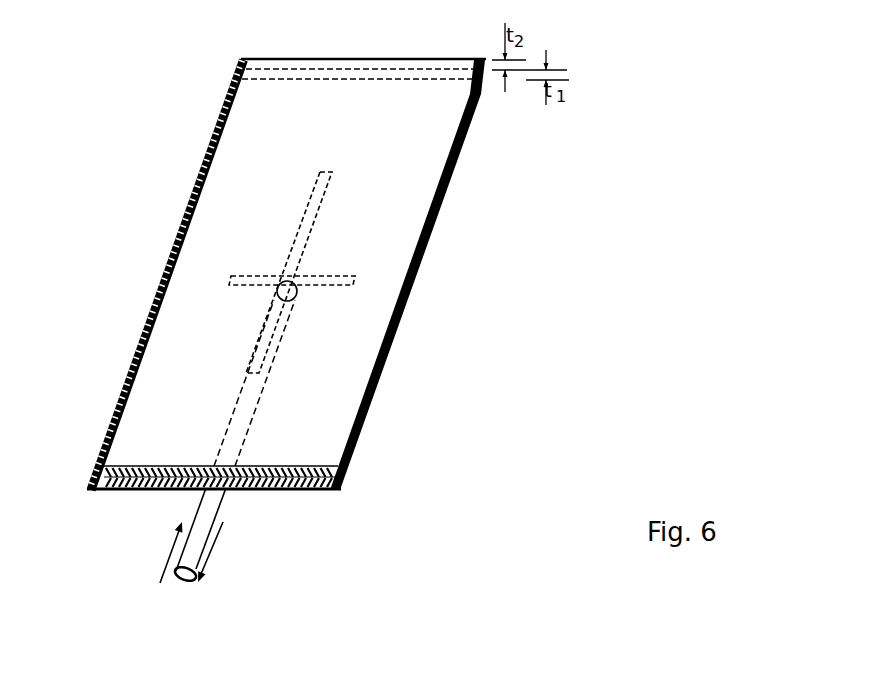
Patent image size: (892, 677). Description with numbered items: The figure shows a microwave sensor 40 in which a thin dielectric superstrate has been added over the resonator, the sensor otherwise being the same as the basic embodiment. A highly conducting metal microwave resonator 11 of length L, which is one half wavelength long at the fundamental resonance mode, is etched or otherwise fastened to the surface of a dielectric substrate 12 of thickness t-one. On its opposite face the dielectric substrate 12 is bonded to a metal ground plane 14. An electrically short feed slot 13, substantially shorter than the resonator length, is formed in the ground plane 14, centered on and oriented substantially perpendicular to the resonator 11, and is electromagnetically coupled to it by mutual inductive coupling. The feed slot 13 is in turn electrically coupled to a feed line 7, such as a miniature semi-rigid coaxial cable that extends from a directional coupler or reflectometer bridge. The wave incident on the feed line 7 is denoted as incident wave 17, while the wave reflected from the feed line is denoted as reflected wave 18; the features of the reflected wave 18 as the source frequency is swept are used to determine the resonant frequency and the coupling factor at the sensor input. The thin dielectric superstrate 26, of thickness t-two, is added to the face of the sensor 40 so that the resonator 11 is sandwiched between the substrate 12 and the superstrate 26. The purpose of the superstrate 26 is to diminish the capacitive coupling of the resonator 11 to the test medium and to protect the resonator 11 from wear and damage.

The feed line 7 is at (220, 504).
The microwave resonator 11 is at (333, 177).
The dielectric substrate 12 is at (450, 191).
The feed slot 13 is at (355, 281).
The ground plane 14 is at (406, 312).
The incident wave 17 is at (157, 552).
The reflected wave 18 is at (215, 552).
The dielectric superstrate 26 is at (337, 373).
The sensor 40 is at (360, 433).